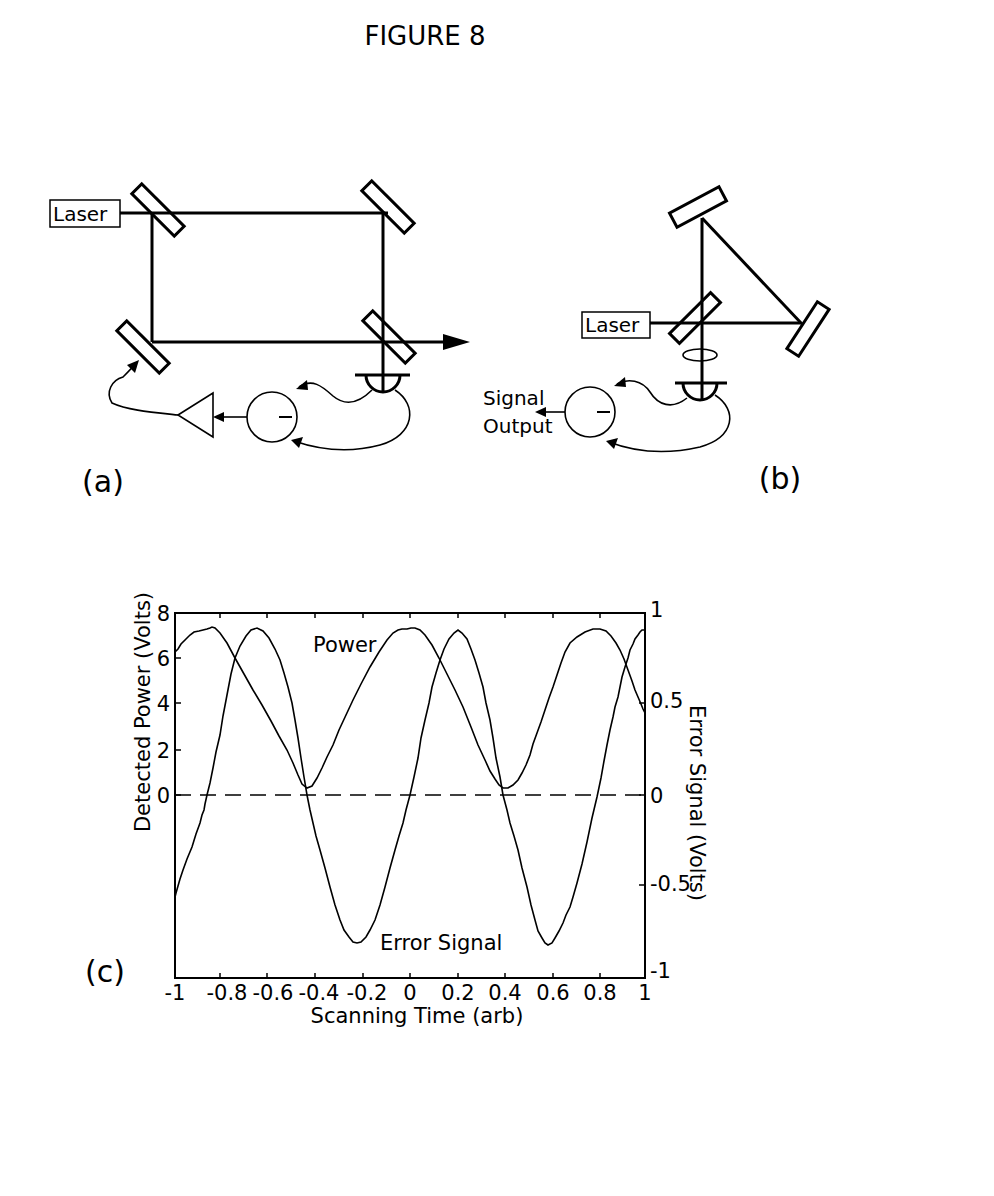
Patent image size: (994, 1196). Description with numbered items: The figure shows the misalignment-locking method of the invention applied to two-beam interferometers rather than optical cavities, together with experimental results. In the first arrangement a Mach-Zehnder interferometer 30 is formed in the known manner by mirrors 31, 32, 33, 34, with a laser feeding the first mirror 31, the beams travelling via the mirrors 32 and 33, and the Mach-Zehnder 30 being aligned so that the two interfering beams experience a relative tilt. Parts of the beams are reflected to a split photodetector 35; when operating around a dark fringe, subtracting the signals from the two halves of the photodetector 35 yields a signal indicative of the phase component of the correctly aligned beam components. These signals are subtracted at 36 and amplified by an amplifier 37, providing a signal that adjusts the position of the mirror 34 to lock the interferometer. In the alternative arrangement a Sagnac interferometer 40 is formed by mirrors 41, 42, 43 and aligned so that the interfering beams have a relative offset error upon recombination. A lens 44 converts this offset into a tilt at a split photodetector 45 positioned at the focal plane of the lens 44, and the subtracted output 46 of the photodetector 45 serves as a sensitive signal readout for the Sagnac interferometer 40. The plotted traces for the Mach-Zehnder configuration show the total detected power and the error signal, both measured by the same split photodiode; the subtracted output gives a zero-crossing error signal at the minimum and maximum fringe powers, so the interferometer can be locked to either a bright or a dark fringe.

The Mach-Zehnder interferometer 30 is at (295, 302).
The mirror 31 is at (157, 201).
The mirror 32 is at (397, 208).
The mirror 33 is at (390, 337).
The mirror 34 is at (136, 354).
The split photodetector 35 is at (402, 382).
The subtraction 36 is at (272, 442).
The amplifier 37 is at (200, 418).
The Sagnac interferometer 40 is at (742, 290).
The mirror 41 is at (697, 207).
The mirror 42 is at (805, 325).
The mirror 43 is at (695, 313).
The lens 44 is at (712, 353).
The split photodetector 45 is at (718, 388).
The subtracted output 46 is at (590, 437).